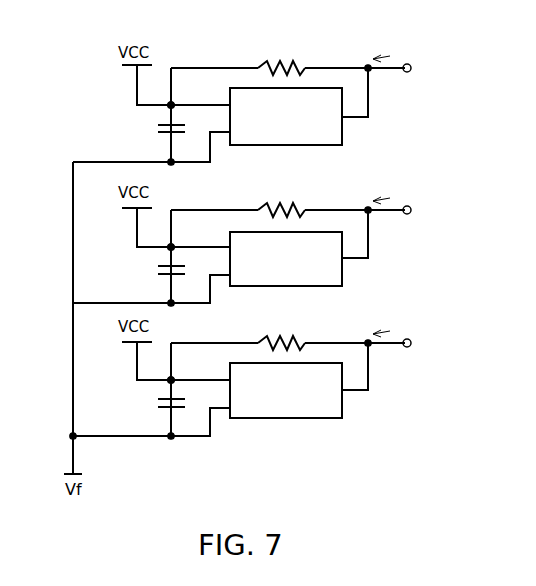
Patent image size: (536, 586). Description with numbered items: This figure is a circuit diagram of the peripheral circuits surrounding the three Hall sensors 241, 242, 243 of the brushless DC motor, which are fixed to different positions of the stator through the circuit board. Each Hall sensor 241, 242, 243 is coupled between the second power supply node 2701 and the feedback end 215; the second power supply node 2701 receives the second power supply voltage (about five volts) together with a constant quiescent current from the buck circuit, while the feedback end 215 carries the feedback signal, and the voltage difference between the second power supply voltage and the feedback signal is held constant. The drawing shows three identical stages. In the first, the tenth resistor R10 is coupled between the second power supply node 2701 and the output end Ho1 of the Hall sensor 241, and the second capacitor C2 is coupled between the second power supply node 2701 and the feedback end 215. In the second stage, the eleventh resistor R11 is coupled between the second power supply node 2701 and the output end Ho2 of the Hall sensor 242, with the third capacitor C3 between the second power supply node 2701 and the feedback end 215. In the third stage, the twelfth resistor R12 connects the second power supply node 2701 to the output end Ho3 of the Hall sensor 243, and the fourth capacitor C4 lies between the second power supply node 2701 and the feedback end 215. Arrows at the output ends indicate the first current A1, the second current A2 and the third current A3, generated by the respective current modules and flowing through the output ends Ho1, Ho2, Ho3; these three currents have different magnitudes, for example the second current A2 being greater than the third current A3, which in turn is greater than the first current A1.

The feedback end 215 is at (70, 436).
The Hall sensor 241 is at (344, 137).
The Hall sensor 242 is at (344, 278).
The Hall sensor 243 is at (344, 410).
The second power supply node 2701 is at (173, 103).
The tenth resistor R10 is at (281, 57).
The eleventh resistor R11 is at (281, 199).
The twelfth resistor R12 is at (281, 332).
The second capacitor C2 is at (157, 128).
The third capacitor C3 is at (157, 270).
The fourth capacitor C4 is at (157, 403).
The first current A1 is at (388, 50).
The second current A2 is at (388, 192).
The third current A3 is at (388, 325).
The output end Ho1 is at (425, 72).
The output end Ho2 is at (425, 214).
The output end Ho3 is at (425, 347).